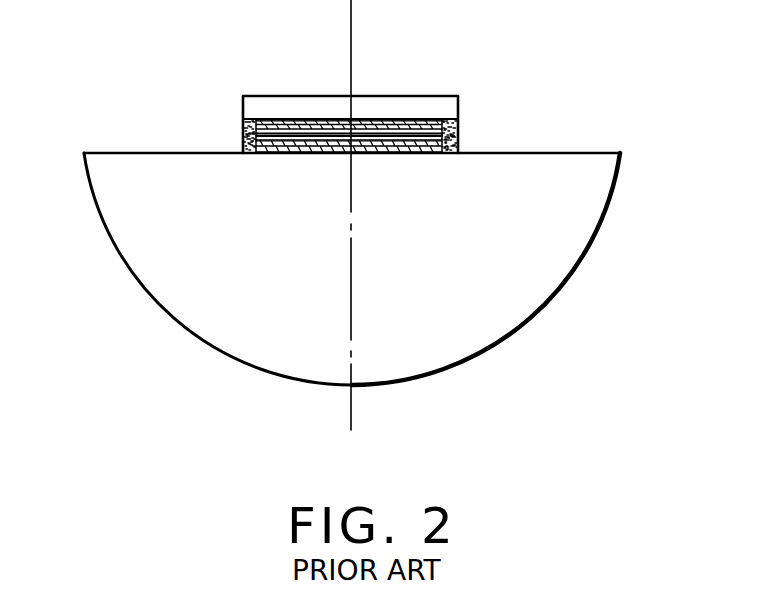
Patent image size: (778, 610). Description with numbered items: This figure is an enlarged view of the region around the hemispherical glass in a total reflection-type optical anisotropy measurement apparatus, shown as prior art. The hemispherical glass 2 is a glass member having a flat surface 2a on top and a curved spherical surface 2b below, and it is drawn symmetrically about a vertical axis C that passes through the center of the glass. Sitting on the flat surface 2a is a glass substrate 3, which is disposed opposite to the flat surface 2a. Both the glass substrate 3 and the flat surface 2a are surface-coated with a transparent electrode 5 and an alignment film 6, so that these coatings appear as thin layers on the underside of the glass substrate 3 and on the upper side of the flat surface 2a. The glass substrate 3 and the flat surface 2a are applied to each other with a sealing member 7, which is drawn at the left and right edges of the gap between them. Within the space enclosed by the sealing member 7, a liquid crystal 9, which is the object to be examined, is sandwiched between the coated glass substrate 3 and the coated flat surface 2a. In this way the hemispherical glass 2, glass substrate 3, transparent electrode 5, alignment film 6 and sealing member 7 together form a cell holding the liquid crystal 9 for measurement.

The hemispherical glass member 2 is at (380, 236).
The flat surface 2a is at (565, 152).
The spherical surface 2b is at (513, 337).
The glass substrate 3 is at (460, 103).
The transparent electrode 5 is at (305, 118).
The alignment film 6 is at (383, 125).
The sealing member 7 is at (243, 134).
The liquid crystal 9 is at (382, 152).
The center axis C is at (352, 410).